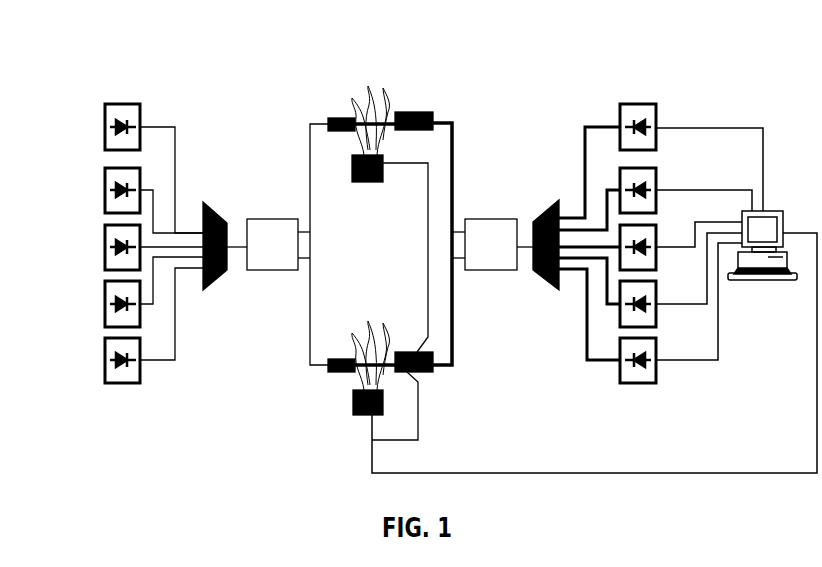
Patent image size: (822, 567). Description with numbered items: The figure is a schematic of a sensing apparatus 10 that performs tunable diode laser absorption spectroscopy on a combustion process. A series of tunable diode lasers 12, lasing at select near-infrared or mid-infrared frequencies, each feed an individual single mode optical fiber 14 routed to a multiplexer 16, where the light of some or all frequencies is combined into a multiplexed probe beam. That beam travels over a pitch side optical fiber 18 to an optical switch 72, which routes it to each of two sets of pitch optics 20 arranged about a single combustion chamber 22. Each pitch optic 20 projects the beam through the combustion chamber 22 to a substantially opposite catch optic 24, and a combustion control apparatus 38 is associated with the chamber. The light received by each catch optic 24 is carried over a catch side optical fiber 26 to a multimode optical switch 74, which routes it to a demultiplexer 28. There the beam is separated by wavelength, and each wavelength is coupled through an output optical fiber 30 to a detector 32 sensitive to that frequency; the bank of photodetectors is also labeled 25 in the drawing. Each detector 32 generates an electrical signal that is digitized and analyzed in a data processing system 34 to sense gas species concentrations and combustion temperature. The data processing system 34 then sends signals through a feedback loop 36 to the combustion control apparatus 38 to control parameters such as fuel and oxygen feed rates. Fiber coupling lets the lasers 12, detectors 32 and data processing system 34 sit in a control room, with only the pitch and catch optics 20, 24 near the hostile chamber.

The sensing apparatus 10 is at (488, 56).
The tunable diode lasers 12 is at (103, 383).
The single mode optical fiber 14 is at (175, 123).
The multiplexer 16 is at (217, 280).
The pitch side optical fiber 18 is at (310, 129).
The pitch optic 20 is at (340, 118).
The combustion chamber 22 is at (380, 238).
The catch optic 24 is at (417, 112).
The detectors 25 is at (638, 255).
The catch side optical fiber 26 is at (452, 141).
The demultiplexer 28 is at (540, 278).
The output optical fiber 30 is at (585, 131).
The detector 32 is at (657, 112).
The data processing system 34 is at (762, 245).
The feedback loop 36 is at (665, 473).
The combustion control apparatus 38 is at (358, 417).
The optical switch 72 is at (262, 270).
The multimode optical switch 74 is at (480, 270).